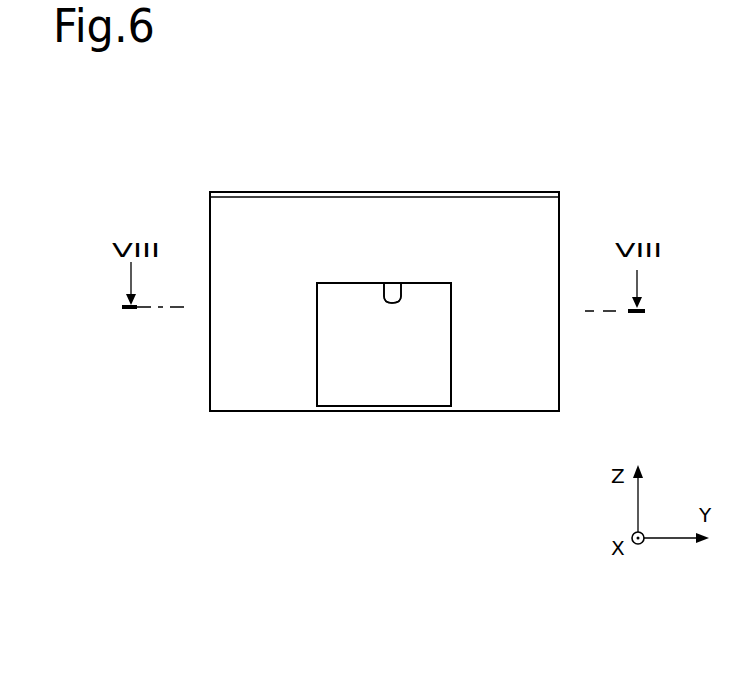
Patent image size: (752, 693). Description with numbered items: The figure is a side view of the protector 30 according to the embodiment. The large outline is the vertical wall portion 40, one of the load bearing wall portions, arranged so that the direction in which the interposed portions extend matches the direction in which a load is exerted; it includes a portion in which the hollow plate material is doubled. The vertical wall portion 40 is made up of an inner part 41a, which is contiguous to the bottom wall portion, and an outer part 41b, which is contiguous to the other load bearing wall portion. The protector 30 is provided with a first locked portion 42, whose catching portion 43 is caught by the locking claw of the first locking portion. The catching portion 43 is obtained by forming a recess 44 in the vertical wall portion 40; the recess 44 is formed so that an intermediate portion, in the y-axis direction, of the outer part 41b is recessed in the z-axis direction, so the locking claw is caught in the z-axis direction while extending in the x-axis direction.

The protector 30 is at (281, 142).
The vertical wall portion 40 is at (438, 410).
The inner part 41a is at (436, 395).
The outer part 41b is at (505, 390).
The first locked portion 42 is at (392, 293).
The catching portion 43 is at (401, 290).
The recess 44 is at (378, 366).